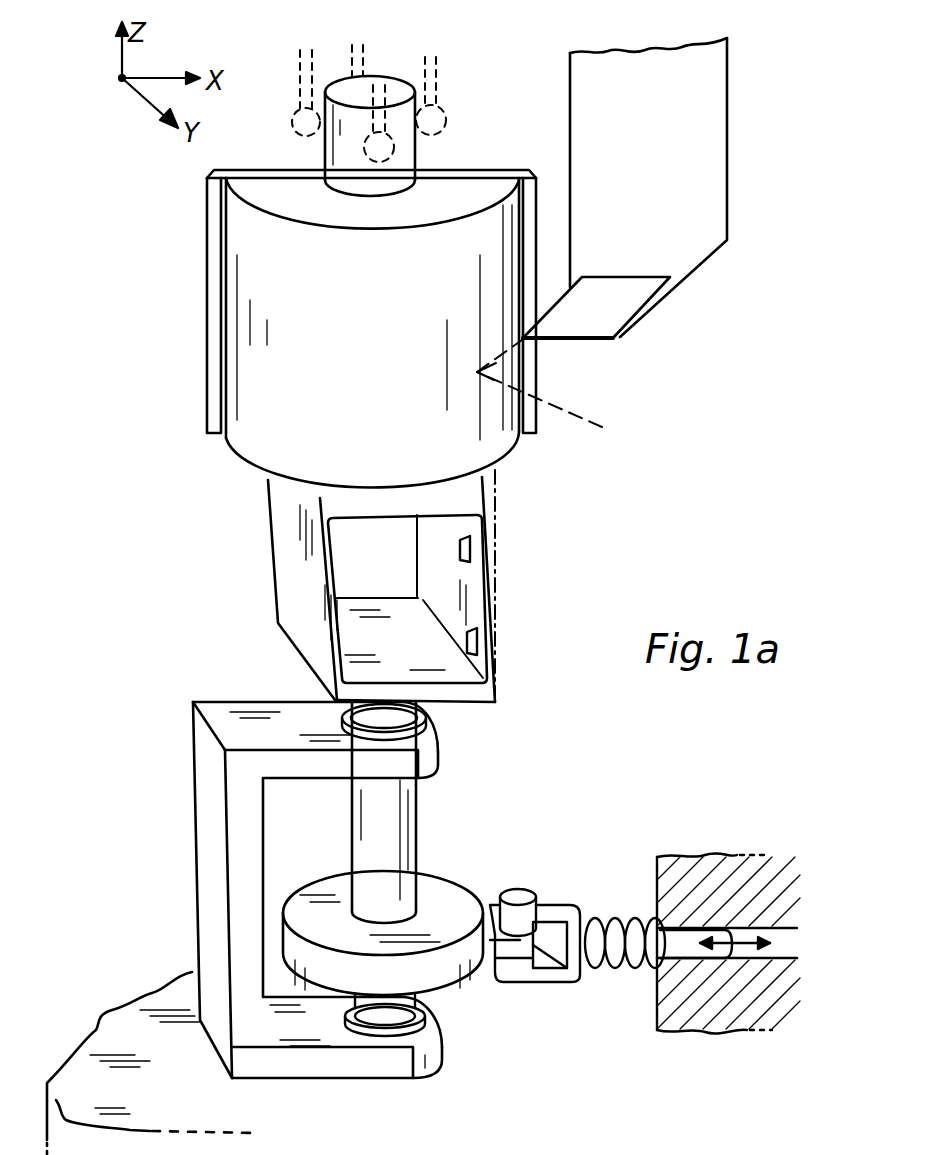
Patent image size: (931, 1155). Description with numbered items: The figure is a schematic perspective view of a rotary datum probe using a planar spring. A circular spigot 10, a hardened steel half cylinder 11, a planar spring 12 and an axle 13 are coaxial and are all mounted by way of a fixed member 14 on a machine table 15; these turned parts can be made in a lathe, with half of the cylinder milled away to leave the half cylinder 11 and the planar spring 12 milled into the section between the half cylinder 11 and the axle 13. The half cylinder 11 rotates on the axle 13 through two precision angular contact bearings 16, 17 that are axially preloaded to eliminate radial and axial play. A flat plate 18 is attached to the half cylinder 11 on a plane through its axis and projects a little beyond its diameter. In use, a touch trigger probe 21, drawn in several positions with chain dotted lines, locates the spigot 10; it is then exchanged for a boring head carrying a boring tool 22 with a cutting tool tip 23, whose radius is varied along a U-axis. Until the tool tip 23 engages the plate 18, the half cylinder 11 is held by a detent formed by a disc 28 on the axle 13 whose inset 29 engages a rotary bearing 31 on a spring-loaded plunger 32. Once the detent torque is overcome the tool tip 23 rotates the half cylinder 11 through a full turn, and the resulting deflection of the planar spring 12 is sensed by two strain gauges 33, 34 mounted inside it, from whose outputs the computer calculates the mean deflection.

The circular spigot 10 is at (395, 90).
The hardened steel half cylinder 11 is at (470, 193).
The planar spring 12 is at (295, 542).
The axle 13 is at (398, 818).
The fixed member 14 is at (212, 868).
The machine table 15 is at (128, 1030).
The precision angular contact bearing 16 is at (423, 752).
The precision angular contact bearing 17 is at (438, 1057).
The flat plate 18 is at (530, 203).
The touch trigger probe 21 is at (300, 79).
The boring tool 22 is at (688, 237).
The cutting tool tip 23 is at (567, 317).
The disc 28 is at (447, 885).
The inset 29 is at (482, 908).
The rotary bearing 31 is at (500, 958).
The spring-loaded plunger 32 is at (563, 897).
The strain gauge 33 is at (466, 643).
The strain gauge 34 is at (458, 549).